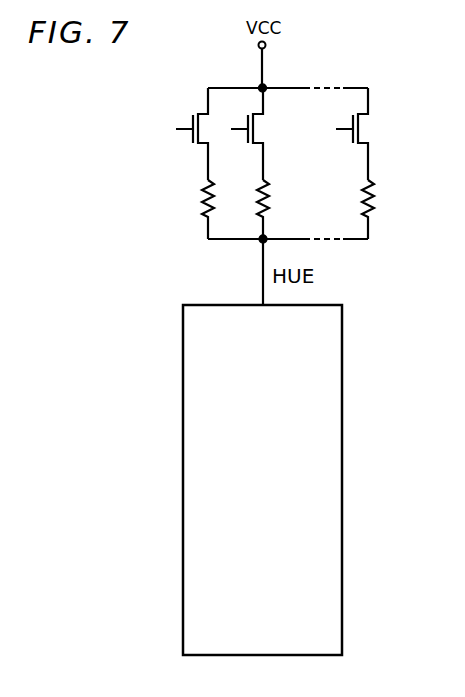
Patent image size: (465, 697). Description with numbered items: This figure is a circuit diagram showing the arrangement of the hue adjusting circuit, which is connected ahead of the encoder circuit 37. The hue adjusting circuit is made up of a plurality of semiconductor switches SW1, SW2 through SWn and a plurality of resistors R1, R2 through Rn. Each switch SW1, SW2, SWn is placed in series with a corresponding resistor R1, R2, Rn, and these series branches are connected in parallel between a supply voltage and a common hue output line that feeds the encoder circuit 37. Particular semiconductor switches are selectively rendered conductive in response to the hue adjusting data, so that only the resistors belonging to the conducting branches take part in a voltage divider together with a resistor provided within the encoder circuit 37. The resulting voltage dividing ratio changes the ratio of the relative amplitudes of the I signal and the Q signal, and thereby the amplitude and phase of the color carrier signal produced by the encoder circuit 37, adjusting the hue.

The semiconductor switch SW1 is at (193, 111).
The semiconductor switch SW2 is at (255, 124).
The semiconductor switch SWn is at (362, 127).
The resistor R1 is at (203, 201).
The resistor R2 is at (269, 199).
The resistor Rn is at (375, 197).
The encoder circuit 37 is at (343, 330).